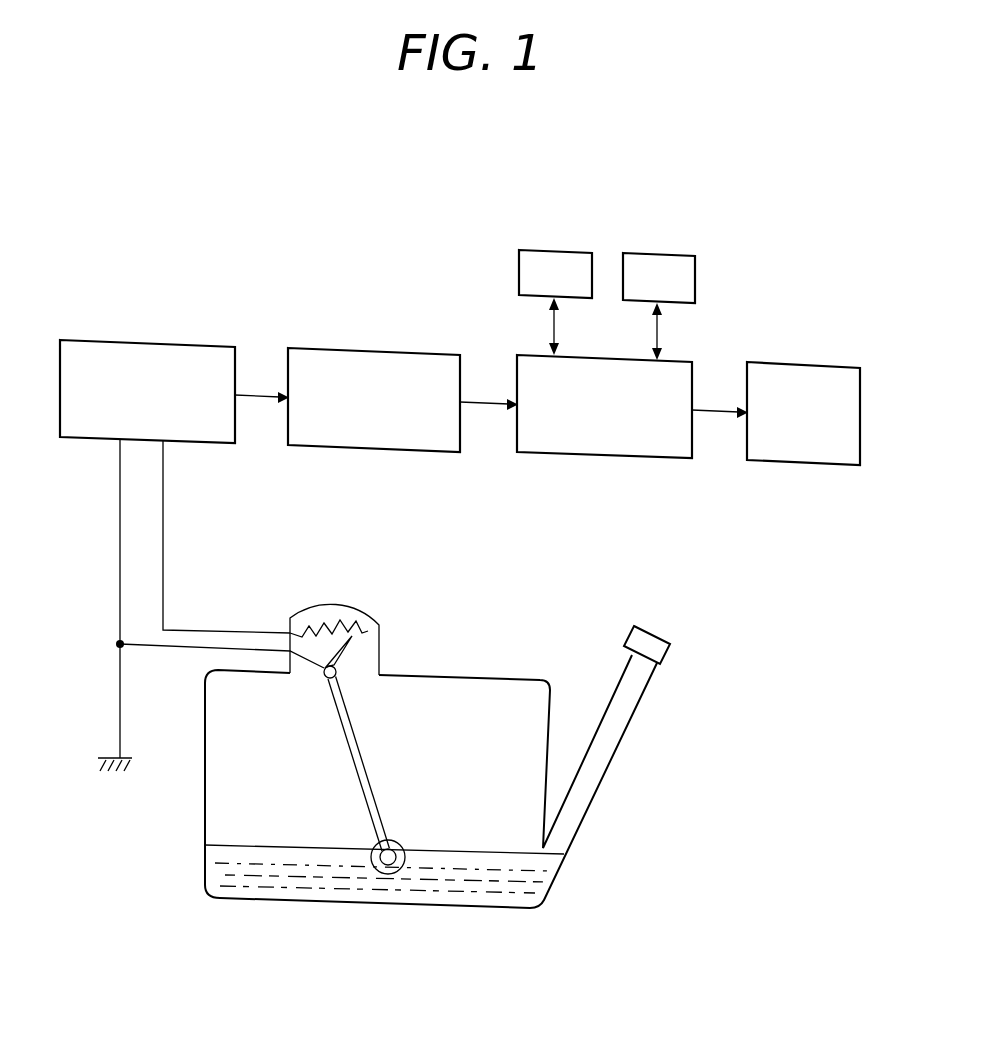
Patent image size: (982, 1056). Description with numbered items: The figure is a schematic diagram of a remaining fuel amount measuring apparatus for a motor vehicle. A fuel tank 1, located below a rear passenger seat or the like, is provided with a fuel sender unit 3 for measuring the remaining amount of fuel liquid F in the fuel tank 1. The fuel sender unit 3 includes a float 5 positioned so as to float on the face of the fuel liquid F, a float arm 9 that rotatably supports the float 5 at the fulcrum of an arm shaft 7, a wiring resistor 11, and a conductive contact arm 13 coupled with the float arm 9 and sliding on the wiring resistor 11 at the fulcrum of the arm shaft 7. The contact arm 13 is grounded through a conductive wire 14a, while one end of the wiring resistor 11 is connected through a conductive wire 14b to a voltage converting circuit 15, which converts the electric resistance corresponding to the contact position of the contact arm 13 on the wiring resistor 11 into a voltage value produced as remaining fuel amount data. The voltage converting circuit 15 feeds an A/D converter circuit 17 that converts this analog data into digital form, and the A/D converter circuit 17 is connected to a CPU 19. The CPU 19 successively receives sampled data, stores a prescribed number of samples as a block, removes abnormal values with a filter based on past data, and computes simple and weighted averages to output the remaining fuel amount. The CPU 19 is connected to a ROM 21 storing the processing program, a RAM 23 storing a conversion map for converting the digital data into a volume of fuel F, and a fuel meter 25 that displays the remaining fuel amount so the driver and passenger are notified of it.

The fuel tank 1 is at (503, 680).
The fuel sender unit 3 is at (395, 607).
The float 5 is at (405, 846).
The arm shaft 7 is at (325, 677).
The float arm 9 is at (370, 767).
The wiring resistor 11 is at (337, 627).
The contact arm 13 is at (345, 659).
The conductive wire 14a is at (150, 648).
The conductive wire 14b is at (163, 562).
The voltage converting circuit 15 is at (148, 340).
The A/D converter circuit 17 is at (374, 348).
The CPU 19 is at (605, 458).
The ROM 21 is at (556, 250).
The RAM 23 is at (660, 253).
The fuel meter 25 is at (805, 362).
The fuel liquid F is at (252, 843).